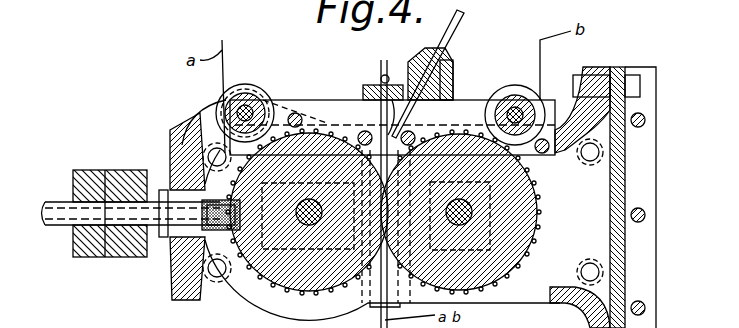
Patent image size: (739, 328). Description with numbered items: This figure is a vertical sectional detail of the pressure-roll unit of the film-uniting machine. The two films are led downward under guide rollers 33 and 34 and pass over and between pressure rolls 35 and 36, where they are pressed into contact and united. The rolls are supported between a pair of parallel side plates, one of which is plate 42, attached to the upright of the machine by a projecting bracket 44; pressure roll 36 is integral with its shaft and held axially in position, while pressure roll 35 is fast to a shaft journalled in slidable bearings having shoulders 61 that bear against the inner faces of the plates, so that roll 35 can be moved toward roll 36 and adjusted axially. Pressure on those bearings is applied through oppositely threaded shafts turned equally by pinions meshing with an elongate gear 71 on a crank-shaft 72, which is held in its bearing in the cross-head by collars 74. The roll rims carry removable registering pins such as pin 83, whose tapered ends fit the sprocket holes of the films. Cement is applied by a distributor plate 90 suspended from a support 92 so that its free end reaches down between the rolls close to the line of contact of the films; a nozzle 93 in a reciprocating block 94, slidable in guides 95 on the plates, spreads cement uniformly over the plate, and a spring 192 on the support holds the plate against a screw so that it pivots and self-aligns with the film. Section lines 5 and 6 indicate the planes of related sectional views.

The section line 5— 5 is at (10, 212).
The section line 6— 6 is at (360, 290).
The guide roller 33 is at (243, 92).
The guide roller 34 is at (535, 83).
The pressure roll 35 is at (265, 280).
The pressure roll 36 is at (518, 222).
The plate 42 is at (569, 271).
The projecting bracket 44 is at (190, 268).
The shoulder 61 is at (323, 125).
The elongate gear 71 is at (150, 162).
The crank-shaft 72 is at (58, 205).
The collar 74 is at (164, 237).
The registering pin 83 is at (532, 188).
The distributor plate 90 is at (392, 73).
The support 92 is at (384, 80).
The nozzle 93 is at (448, 90).
The reciprocating block 94 is at (446, 68).
The guide 95 is at (455, 72).
The spring 192 is at (392, 127).